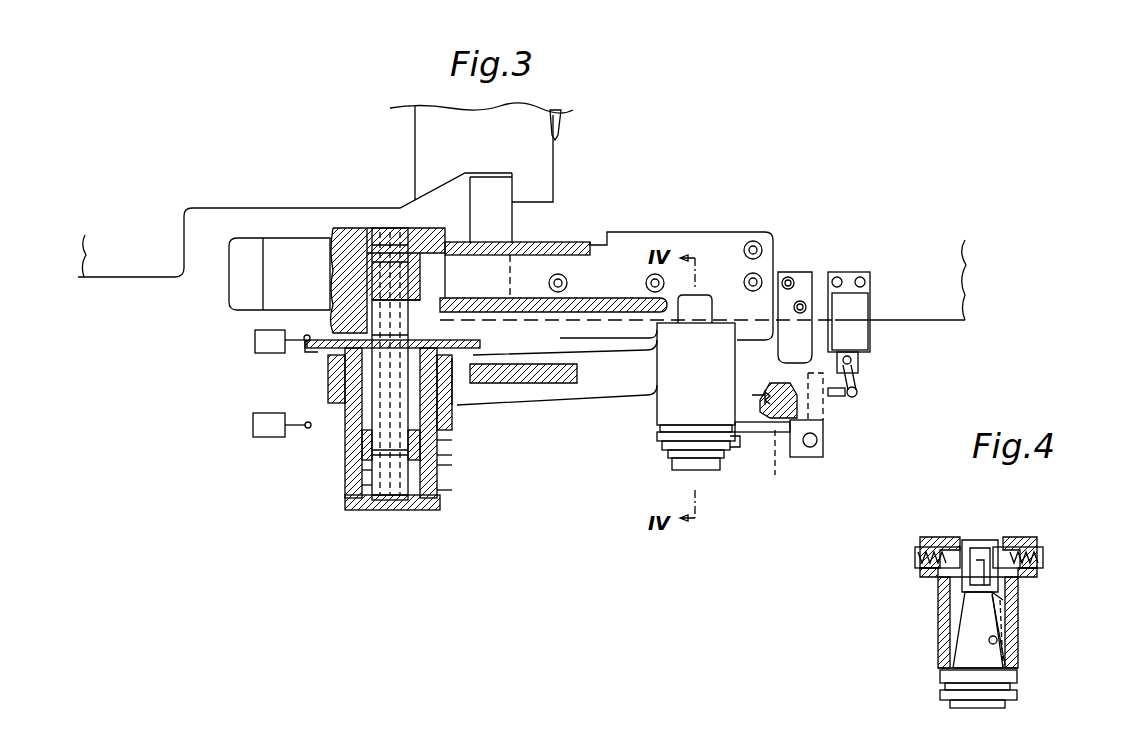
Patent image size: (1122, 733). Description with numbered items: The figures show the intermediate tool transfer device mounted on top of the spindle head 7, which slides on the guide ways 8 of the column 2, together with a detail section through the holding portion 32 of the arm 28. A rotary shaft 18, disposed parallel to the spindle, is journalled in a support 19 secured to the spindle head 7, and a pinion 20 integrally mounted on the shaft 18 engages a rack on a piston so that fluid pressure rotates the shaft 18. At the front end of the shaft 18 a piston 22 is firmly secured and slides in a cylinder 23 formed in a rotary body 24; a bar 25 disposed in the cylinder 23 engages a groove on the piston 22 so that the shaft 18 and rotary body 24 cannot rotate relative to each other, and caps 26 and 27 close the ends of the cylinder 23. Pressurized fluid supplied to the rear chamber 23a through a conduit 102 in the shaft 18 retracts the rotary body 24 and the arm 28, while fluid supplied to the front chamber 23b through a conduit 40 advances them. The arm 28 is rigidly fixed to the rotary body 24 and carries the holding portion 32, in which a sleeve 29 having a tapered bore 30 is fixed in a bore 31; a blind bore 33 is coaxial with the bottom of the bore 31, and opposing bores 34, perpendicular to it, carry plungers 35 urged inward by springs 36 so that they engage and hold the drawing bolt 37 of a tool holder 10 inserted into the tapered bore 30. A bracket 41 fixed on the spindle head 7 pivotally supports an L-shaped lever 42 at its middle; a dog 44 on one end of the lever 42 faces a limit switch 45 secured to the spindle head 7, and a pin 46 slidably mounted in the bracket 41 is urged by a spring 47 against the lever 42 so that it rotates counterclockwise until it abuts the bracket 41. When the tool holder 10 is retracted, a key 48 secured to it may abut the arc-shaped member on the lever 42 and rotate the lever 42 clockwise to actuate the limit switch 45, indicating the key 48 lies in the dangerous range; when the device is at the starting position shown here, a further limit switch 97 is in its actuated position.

In FIG. 3, the column 2 is at (152, 265).
In FIG. 3, the spindle head 7 is at (938, 305).
In FIG. 3, the guide ways 8 is at (572, 150).
In FIG. 3, the tool holder 10 is at (705, 470).
In FIG. 4, the tool holder 10 is at (917, 630).
In FIG. 3, the rotary shaft 18 is at (367, 430).
In FIG. 3, the support 19 is at (625, 242).
In FIG. 3, the pinion 20 is at (352, 228).
In FIG. 3, the piston 22 is at (440, 465).
In FIG. 3, the cylinder 23 is at (377, 408).
In FIG. 3, the rear chamber 23a is at (343, 453).
In FIG. 3, the front chamber 23b is at (342, 497).
In FIG. 3, the rotary body 24 is at (440, 455).
In FIG. 3, the bar 25 is at (440, 440).
In FIG. 3, the cap 26 is at (440, 490).
In FIG. 3, the cap 27 is at (395, 333).
In FIG. 3, the arm 28 is at (617, 380).
In FIG. 4, the sleeve 29 is at (1015, 618).
In FIG. 4, the tapered bore 30 is at (1040, 645).
In FIG. 4, the bore 31 is at (1012, 600).
In FIG. 3, the holding portion 32 is at (660, 403).
In FIG. 4, the holding portion 32 is at (938, 600).
In FIG. 4, the blind bore 33 is at (1020, 580).
In FIG. 4, the opposing bores 34 is at (967, 540).
In FIG. 4, the plungers 35 is at (978, 548).
In FIG. 4, the springs 36 is at (915, 556).
In FIG. 4, the drawing bolt 37 is at (920, 577).
In FIG. 3, the conduit 40 is at (340, 485).
In FIG. 3, the bracket 41 is at (822, 283).
In FIG. 3, the L-shaped lever 42 is at (800, 457).
In FIG. 3, the dog 44 is at (852, 398).
In FIG. 3, the limit switch 45 is at (858, 330).
In FIG. 3, the pin 46 is at (790, 403).
In FIG. 3, the spring 47 is at (780, 427).
In FIG. 3, the key 48 is at (735, 445).
In FIG. 3, the limit switch 97 is at (255, 343).
In FIG. 3, the conduit 102 is at (340, 452).